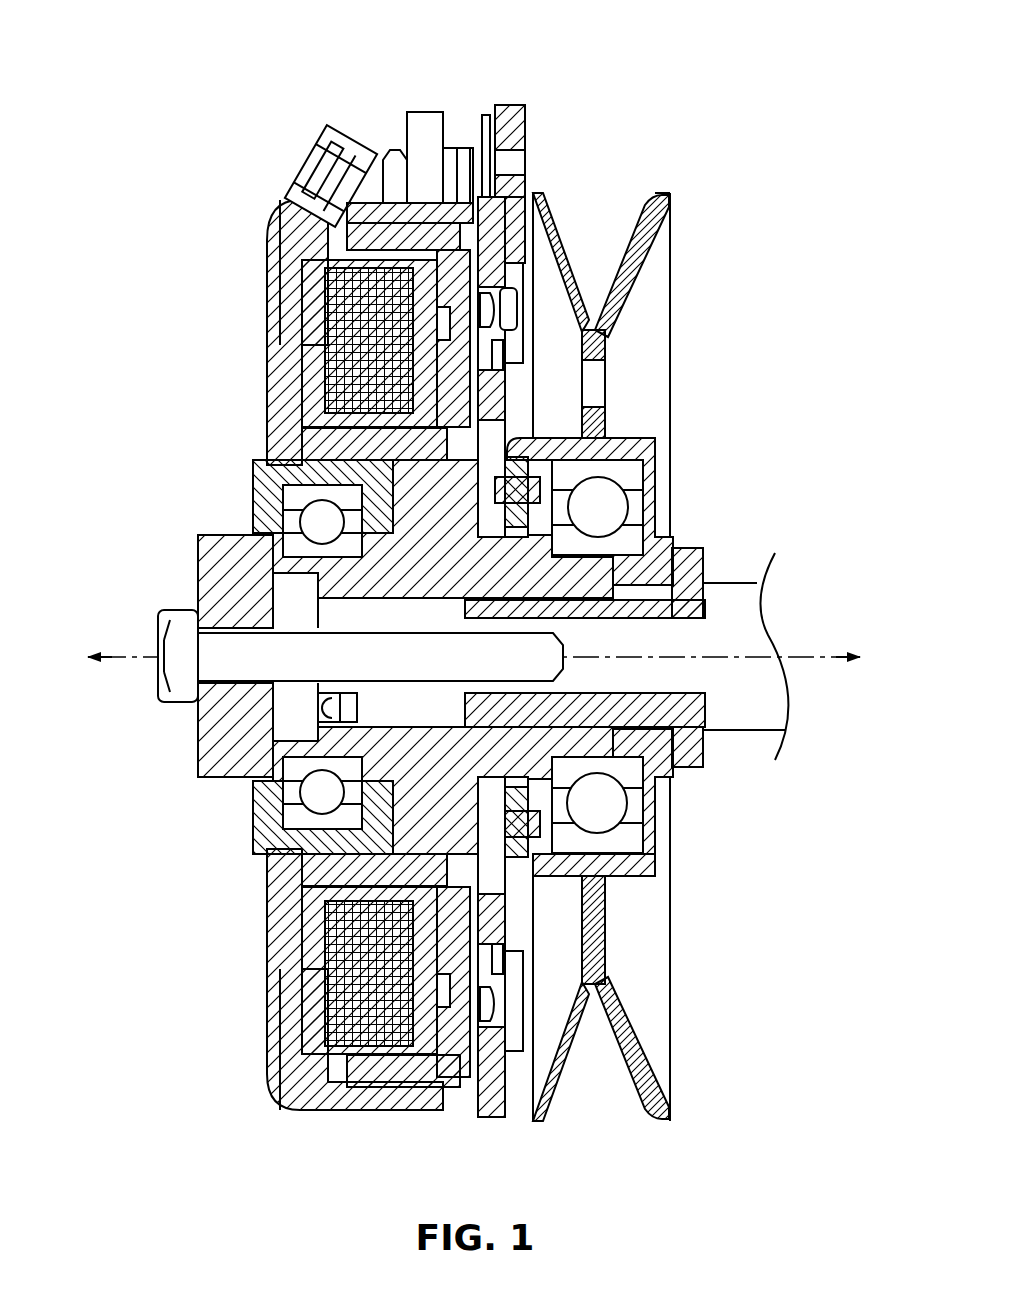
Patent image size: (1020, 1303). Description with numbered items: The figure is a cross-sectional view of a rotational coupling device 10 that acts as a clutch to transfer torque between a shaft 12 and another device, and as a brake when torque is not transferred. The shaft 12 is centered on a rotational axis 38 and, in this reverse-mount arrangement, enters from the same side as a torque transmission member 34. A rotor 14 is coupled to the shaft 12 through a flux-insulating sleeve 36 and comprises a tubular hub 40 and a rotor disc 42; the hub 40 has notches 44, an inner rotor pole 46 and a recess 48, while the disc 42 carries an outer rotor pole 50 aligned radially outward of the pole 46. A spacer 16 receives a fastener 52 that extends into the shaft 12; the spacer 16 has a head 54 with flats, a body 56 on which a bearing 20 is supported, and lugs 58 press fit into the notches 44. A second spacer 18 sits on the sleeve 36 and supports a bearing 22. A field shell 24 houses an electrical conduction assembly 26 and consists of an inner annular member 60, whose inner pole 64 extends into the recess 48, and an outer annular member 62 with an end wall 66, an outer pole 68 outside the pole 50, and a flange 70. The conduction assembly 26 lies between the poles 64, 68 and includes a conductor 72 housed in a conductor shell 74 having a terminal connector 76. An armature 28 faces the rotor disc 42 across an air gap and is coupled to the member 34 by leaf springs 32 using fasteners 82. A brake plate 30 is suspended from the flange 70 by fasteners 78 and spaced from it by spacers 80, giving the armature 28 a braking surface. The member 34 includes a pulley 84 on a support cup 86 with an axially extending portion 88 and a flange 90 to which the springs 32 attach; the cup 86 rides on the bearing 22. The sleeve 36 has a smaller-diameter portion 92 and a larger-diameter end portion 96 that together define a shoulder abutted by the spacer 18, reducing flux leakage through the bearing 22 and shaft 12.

The rotational coupling device 10 is at (298, 100).
The shaft 12 is at (765, 692).
The rotor 14 is at (360, 858).
The spacer 16 is at (230, 735).
The spacer 18 is at (660, 560).
The bearing 20 is at (320, 520).
The bearing 22 is at (598, 800).
The field shell 24 is at (238, 797).
The electrical conduction assembly 26 is at (355, 330).
The armature 28 is at (490, 1105).
The brake plate 30 is at (520, 120).
The springs 32 is at (540, 462).
The torque transmission member 34 is at (650, 260).
The sleeve 36 is at (678, 632).
The rotational axis 38 is at (128, 637).
The hub 40 is at (440, 595).
The rotor disc 42 is at (453, 1052).
The notches 44 is at (350, 700).
The inner rotor pole 46 is at (330, 437).
The recess 48 is at (470, 745).
The outer rotor pole 50 is at (418, 235).
The fastener 52 is at (162, 692).
The head 54 is at (222, 583).
The body 56 is at (293, 565).
The lugs 58 is at (330, 705).
The inner annular member 60 is at (420, 835).
The outer annular member 62 is at (290, 1060).
The inner pole 64 is at (312, 482).
The end wall 66 is at (290, 375).
The outer pole 68 is at (353, 220).
The flange 70 is at (420, 135).
The conductor 72 is at (360, 975).
The conductor shell 74 is at (405, 1050).
The terminal connector 76 is at (305, 167).
The fasteners 78 is at (398, 160).
The spacers 80 is at (487, 150).
The fasteners 82 is at (578, 490).
The pulley 84 is at (645, 320).
The support cup 86 is at (653, 875).
The axially extending portion 88 is at (633, 863).
The flange 90 is at (505, 870).
The portion 92 is at (570, 612).
The portion 96 is at (705, 745).